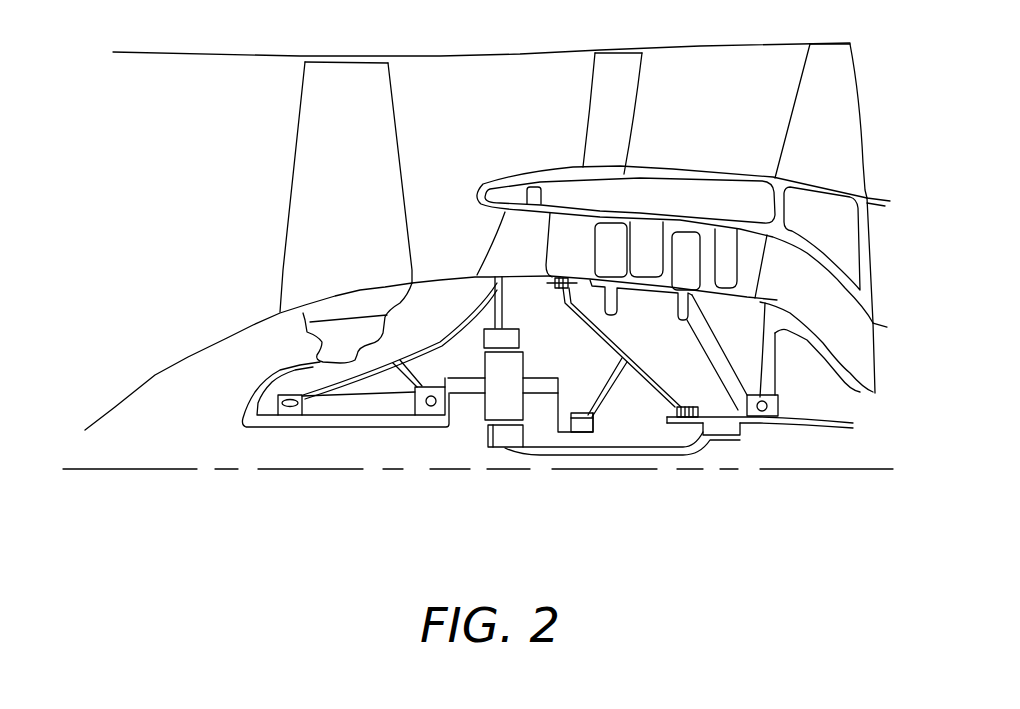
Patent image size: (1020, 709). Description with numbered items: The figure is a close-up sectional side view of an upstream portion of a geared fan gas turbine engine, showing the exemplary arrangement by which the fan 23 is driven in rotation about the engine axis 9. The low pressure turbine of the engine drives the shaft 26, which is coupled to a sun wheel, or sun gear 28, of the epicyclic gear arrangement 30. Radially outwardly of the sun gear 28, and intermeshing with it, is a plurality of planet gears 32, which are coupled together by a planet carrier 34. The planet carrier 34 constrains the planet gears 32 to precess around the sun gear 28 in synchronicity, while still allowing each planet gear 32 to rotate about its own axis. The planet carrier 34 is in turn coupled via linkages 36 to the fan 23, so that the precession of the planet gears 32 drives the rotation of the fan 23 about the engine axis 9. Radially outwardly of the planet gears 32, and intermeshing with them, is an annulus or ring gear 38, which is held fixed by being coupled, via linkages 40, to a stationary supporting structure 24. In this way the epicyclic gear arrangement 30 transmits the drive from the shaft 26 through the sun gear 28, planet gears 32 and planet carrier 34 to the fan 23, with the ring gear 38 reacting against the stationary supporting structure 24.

The engine axis 9 is at (177, 470).
The fan 23 is at (322, 187).
The stationary supporting structure 24 is at (507, 238).
The shaft 26 is at (630, 451).
The sun gear 28 is at (506, 437).
The epicyclic gear arrangement 30 is at (493, 408).
The planet gears 32 is at (489, 425).
The planet carrier 34 is at (545, 417).
The linkages 36 is at (462, 416).
The ring gear 38 is at (510, 338).
The linkages 40 is at (508, 310).